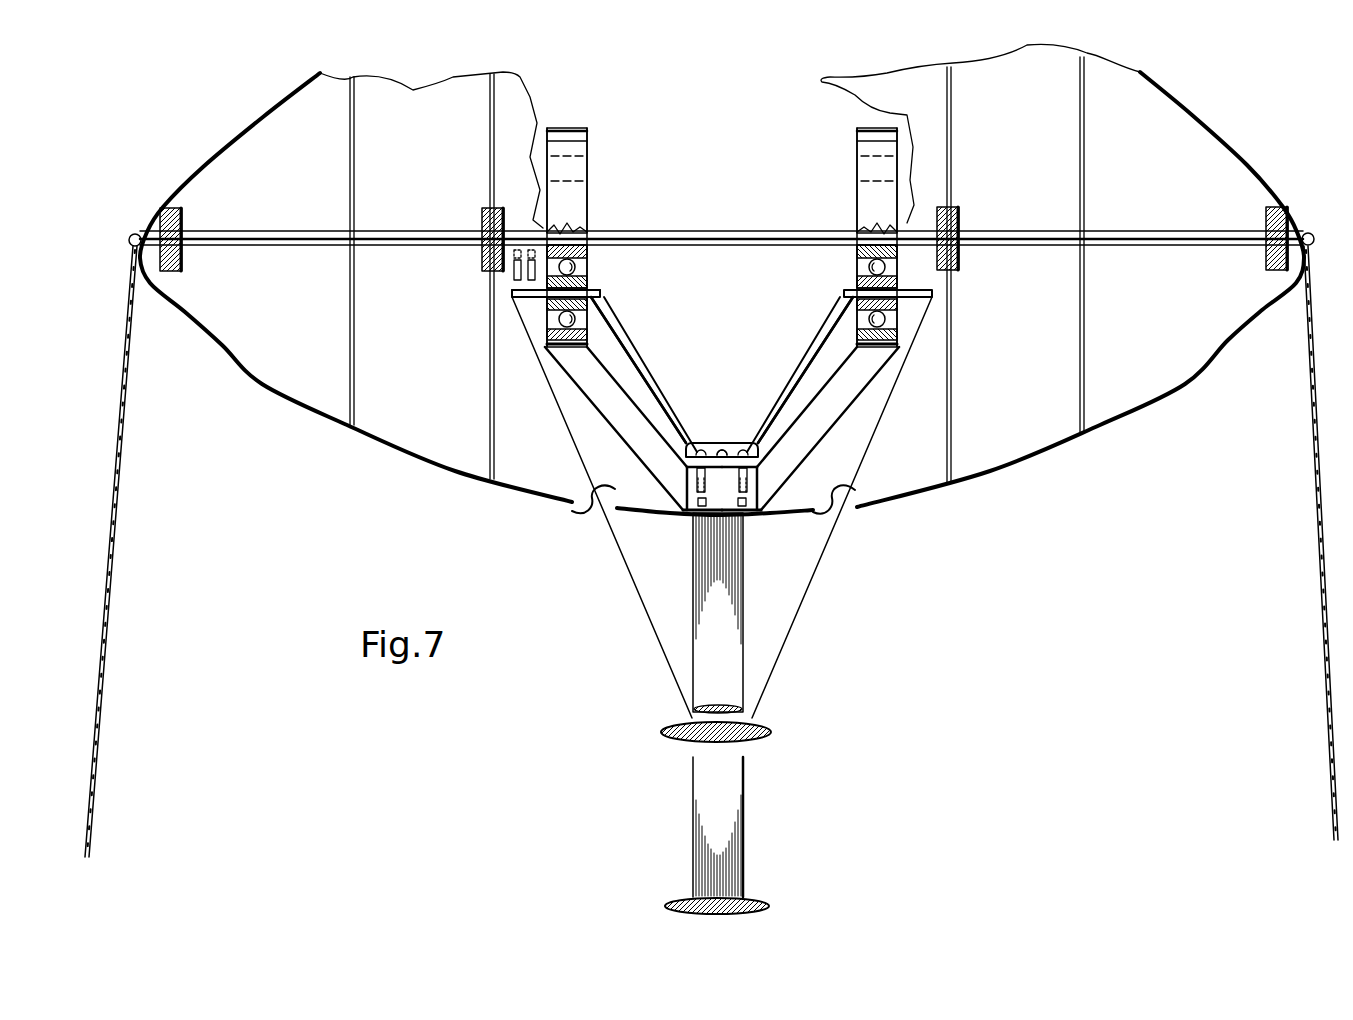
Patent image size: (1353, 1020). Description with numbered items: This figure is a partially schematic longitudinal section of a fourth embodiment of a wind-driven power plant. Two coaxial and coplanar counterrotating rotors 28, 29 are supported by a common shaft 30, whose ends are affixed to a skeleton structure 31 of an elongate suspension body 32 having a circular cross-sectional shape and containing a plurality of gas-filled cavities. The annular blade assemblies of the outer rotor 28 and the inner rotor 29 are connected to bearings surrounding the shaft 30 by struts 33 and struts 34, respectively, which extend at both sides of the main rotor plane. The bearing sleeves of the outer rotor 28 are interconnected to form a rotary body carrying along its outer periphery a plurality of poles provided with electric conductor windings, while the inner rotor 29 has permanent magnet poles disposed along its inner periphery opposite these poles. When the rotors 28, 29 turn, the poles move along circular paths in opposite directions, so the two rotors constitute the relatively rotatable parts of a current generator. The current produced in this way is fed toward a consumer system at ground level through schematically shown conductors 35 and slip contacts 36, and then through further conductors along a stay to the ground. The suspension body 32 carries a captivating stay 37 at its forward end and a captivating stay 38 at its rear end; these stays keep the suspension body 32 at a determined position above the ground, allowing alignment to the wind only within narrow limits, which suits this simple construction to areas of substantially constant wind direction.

The outer rotor 28 is at (727, 807).
The inner rotor 29 is at (737, 658).
The common shaft 30 is at (678, 232).
The skeleton structure 31 is at (949, 108).
The suspension body 32 is at (1020, 468).
The struts 33 is at (811, 565).
The struts 34 is at (816, 404).
The conductors 35 is at (636, 358).
The slip contacts 36 is at (513, 286).
The captivating stay 37 is at (121, 522).
The captivating stay 38 is at (1318, 525).